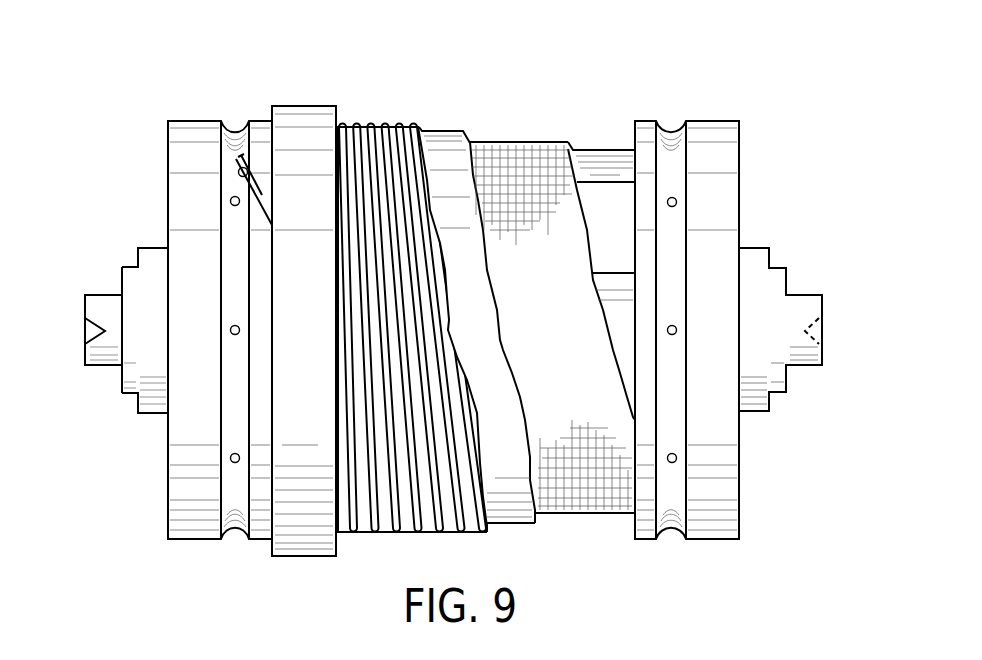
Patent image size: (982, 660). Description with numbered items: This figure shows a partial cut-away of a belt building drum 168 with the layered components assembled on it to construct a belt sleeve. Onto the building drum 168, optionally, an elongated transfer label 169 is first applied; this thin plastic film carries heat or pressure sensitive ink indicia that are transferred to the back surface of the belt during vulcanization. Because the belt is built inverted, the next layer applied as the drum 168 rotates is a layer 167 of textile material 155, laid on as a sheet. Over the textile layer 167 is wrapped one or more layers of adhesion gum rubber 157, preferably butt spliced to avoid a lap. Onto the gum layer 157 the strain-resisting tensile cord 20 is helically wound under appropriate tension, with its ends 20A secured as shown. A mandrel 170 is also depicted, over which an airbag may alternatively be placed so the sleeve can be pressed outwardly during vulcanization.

The tensile cord 20 is at (387, 127).
The ends of the tensile cord 20A is at (274, 198).
The mandrel 170 is at (310, 123).
The adhesion gum rubber layer 157 is at (444, 148).
The textile material 155 is at (530, 155).
The building drum 168 is at (600, 153).
The transfer label 169 is at (612, 244).
The textile layer 167 is at (598, 524).